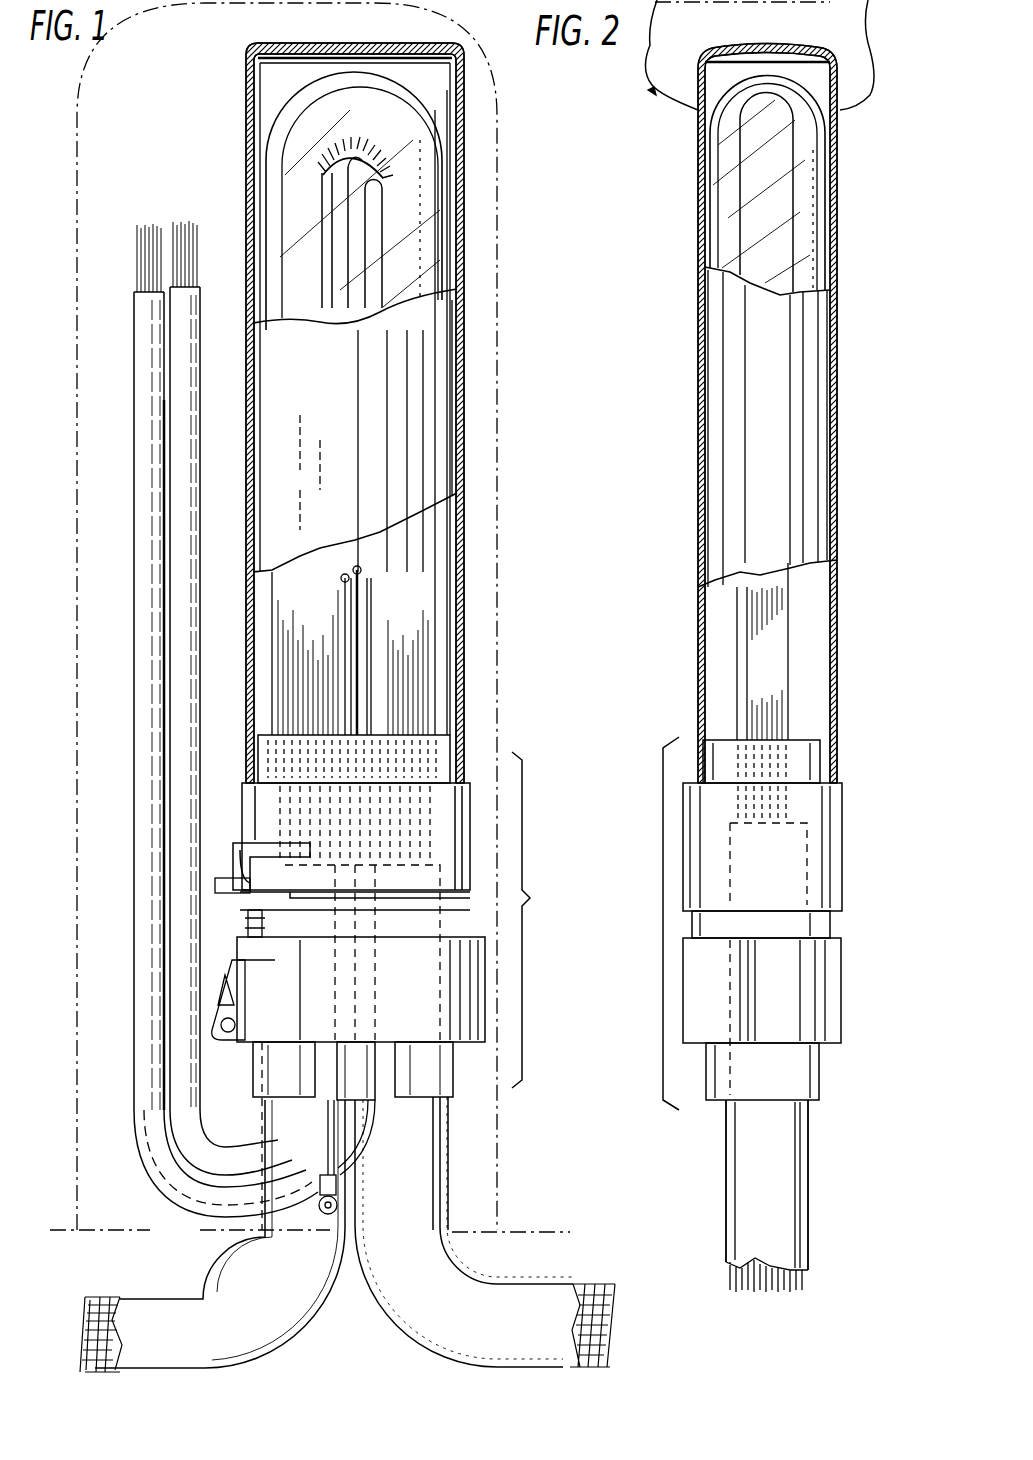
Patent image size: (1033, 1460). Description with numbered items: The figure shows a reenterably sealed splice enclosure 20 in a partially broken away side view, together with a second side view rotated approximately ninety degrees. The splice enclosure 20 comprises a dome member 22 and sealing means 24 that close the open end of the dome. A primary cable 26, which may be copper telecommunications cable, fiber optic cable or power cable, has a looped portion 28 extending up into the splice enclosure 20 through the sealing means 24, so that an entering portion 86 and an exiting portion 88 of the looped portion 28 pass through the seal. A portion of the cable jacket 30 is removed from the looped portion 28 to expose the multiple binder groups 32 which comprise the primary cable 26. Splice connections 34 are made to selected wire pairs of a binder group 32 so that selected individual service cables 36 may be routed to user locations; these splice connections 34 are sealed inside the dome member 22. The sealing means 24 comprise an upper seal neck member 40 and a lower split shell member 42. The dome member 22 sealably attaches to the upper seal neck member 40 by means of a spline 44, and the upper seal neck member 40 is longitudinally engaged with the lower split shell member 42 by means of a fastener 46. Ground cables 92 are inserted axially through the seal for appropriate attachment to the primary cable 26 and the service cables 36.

In FIG. 1, the splice enclosure 20 is at (472, 228).
In FIG. 2, the splice enclosure 20 is at (690, 164).
In FIG. 1, the dome member 22 is at (465, 340).
In FIG. 2, the dome member 22 is at (700, 228).
In FIG. 1, the sealing means 24 is at (542, 920).
In FIG. 2, the sealing means 24 is at (644, 923).
In FIG. 1, the primary cable 26 is at (495, 1282).
In FIG. 2, the primary cable 26 is at (820, 1165).
In FIG. 1, the looped portion 28 is at (438, 633).
In FIG. 1, the cable jacket 30 is at (290, 213).
In FIG. 2, the cable jacket 30 is at (738, 822).
In FIG. 1, the binder groups 32 is at (105, 1297).
In FIG. 2, the binder groups 32 is at (745, 688).
In FIG. 1, the splice connections 34 is at (322, 164).
In FIG. 1, the service cables 36 is at (185, 365).
In FIG. 1, the upper seal neck member 40 is at (256, 790).
In FIG. 2, the upper seal neck member 40 is at (842, 828).
In FIG. 1, the lower split shell member 42 is at (250, 1044).
In FIG. 2, the lower split shell member 42 is at (845, 962).
In FIG. 1, the spline 44 is at (247, 843).
In FIG. 1, the fastener 46 is at (262, 925).
In FIG. 1, the entering portion 86 is at (553, 1345).
In FIG. 1, the exiting portion 88 is at (200, 1272).
In FIG. 1, the ground cables 92 is at (328, 1122).